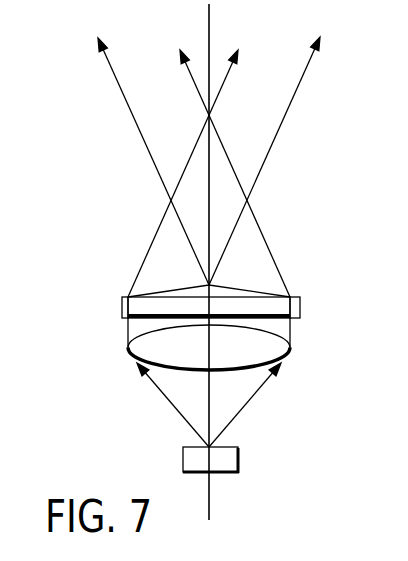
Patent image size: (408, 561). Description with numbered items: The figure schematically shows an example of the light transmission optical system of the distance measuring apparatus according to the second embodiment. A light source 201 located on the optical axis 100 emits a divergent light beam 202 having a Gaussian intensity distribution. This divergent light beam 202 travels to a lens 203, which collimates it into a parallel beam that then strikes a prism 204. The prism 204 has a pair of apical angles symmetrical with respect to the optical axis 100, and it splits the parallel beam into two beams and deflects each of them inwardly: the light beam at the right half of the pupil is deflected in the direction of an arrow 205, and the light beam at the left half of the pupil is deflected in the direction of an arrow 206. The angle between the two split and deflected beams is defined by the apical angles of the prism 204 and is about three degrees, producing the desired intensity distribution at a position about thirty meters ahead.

The optical axis 100 is at (211, 20).
The light source 201 is at (240, 457).
The divergent light beam 202 is at (245, 408).
The lens 203 is at (281, 347).
The prism 204 is at (258, 290).
The arrow 205 is at (265, 235).
The arrow 206 is at (155, 233).